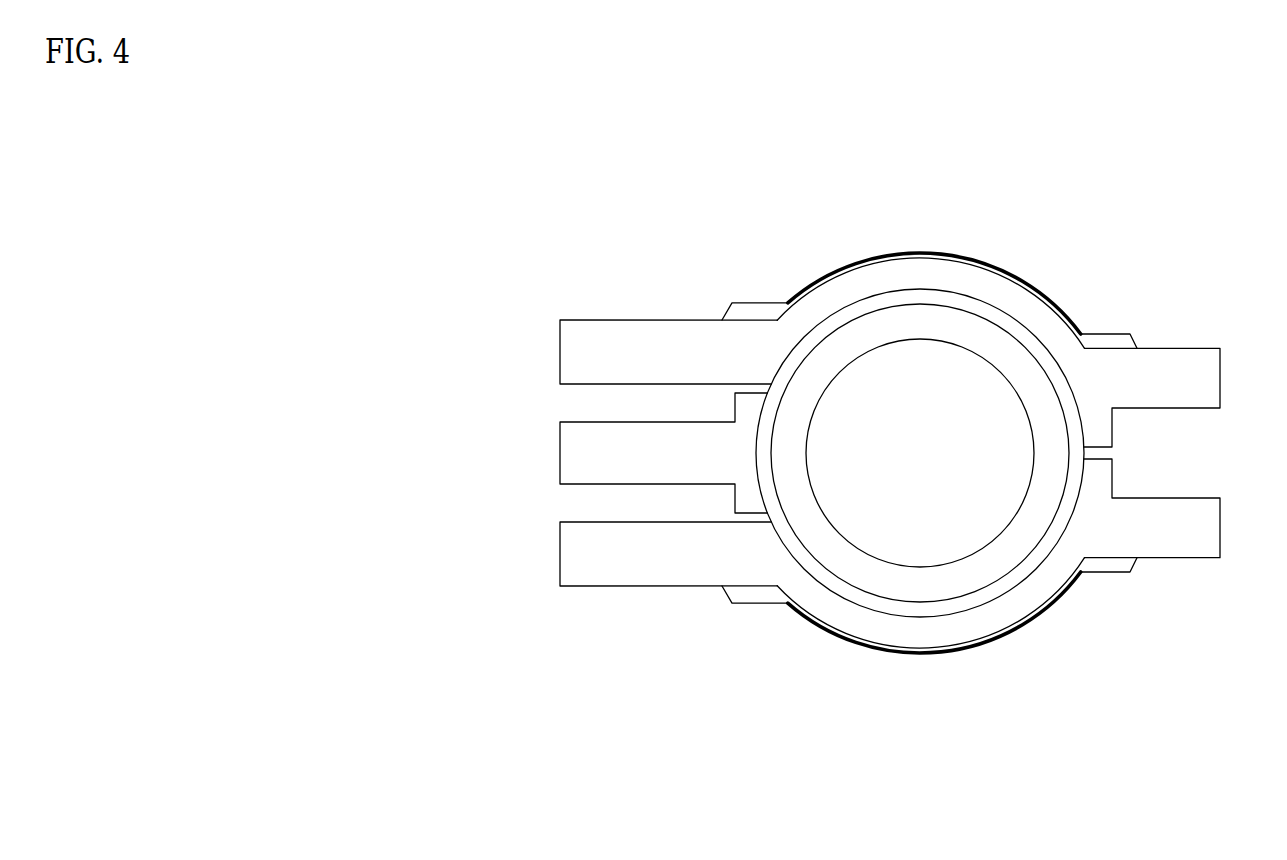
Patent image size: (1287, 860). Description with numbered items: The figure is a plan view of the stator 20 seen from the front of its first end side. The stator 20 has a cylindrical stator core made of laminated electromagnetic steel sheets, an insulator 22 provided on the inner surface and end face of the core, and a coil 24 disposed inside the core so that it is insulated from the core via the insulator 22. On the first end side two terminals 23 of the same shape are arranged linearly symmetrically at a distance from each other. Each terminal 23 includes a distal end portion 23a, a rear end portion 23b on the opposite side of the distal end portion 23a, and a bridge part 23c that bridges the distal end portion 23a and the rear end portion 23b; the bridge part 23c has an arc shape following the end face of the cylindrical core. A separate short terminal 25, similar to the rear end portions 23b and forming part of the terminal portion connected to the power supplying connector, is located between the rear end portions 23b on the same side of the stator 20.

The stator 20 is at (760, 46).
The insulator 22 is at (1150, 467).
The terminal 23 is at (970, 142).
The distal end portion 23a is at (1157, 360).
The rear end portion 23b is at (683, 337).
The bridge part 23c is at (894, 270).
The coil 24 is at (1042, 445).
The short terminal 25 is at (577, 452).